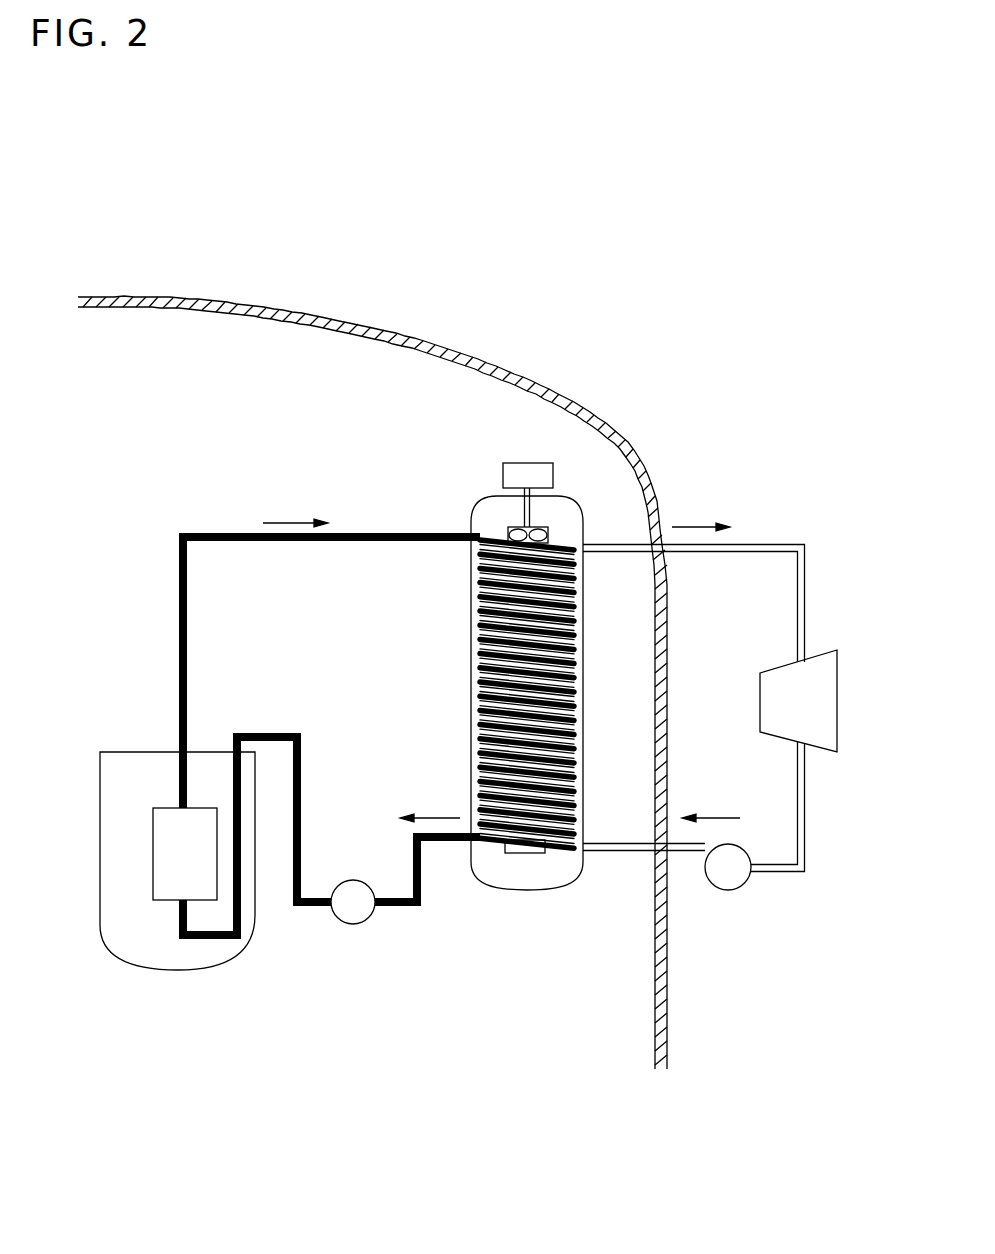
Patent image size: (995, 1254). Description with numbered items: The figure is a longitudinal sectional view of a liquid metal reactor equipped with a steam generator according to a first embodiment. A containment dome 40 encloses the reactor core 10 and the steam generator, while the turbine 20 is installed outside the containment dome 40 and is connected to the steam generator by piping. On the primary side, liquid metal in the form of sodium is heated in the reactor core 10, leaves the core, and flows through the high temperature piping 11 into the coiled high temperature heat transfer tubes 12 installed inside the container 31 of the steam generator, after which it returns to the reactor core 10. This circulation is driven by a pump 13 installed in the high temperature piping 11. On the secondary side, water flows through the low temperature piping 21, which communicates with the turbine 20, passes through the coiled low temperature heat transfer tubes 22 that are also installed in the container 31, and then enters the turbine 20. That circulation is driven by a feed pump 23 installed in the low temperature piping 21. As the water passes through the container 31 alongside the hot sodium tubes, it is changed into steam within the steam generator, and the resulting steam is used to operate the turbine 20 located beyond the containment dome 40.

The reactor core 10 is at (155, 887).
The high temperature piping 11 is at (178, 636).
The high temperature heat transfer tubes 12 is at (478, 632).
The pump 13 is at (354, 917).
The turbine 20 is at (832, 752).
The low temperature piping 21 is at (763, 547).
The low temperature heat transfer tubes 22 is at (575, 655).
The feed pump 23 is at (727, 882).
The container 31 is at (547, 880).
The containment dome 40 is at (601, 420).